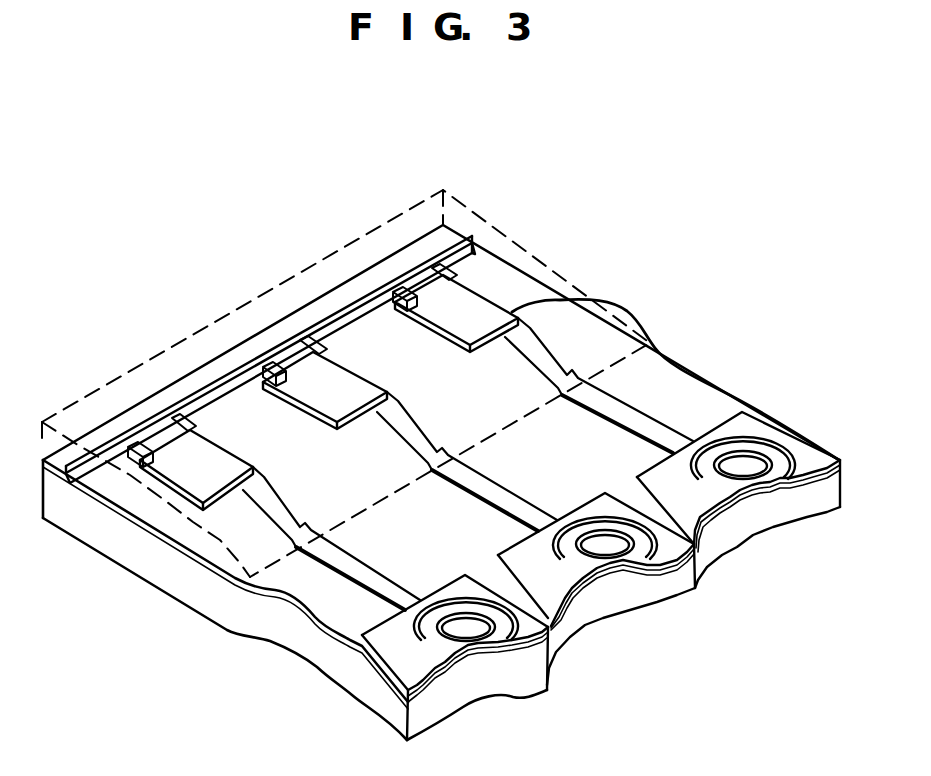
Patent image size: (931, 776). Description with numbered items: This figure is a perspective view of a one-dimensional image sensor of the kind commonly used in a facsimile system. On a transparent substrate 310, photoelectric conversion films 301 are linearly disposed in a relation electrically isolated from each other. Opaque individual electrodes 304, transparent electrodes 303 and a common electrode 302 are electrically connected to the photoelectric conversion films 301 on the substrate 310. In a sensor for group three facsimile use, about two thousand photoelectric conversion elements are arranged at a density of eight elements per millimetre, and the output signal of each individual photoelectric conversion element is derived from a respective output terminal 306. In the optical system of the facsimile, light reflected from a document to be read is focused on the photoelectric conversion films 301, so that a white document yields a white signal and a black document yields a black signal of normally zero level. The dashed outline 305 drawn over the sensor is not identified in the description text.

The photoelectric conversion films 301 is at (495, 310).
The common electrode 302 is at (477, 237).
The transparent electrodes 303 is at (510, 307).
The opaque individual electrodes 304 is at (620, 308).
The chip mounting region 305 is at (380, 230).
The output terminals 306 is at (855, 432).
The transparent substrate 310 is at (128, 553).